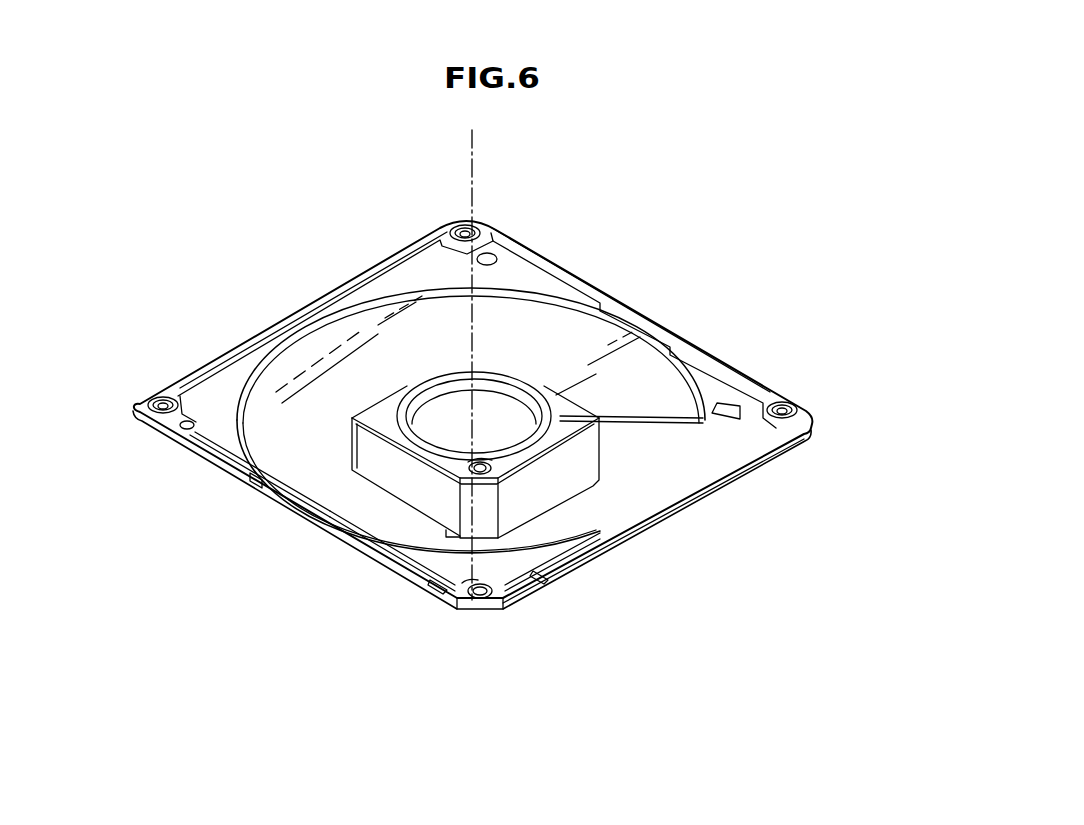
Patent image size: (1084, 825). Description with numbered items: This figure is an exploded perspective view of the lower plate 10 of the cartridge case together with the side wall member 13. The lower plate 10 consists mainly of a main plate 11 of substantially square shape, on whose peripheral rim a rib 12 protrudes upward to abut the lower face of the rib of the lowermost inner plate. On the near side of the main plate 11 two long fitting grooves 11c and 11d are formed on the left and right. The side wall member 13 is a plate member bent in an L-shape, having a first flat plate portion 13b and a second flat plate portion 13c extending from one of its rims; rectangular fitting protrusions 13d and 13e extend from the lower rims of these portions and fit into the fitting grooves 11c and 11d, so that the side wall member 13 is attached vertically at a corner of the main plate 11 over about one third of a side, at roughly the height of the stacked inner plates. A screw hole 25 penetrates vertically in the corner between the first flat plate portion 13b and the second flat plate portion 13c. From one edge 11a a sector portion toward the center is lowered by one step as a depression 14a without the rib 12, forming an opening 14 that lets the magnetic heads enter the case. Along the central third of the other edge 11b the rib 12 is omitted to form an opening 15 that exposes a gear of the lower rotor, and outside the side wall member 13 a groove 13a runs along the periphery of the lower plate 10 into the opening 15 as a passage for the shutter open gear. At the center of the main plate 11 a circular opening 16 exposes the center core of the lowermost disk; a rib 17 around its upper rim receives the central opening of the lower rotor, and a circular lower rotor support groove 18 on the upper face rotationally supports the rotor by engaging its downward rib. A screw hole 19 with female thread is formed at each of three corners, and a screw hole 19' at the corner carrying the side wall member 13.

The lower plate 10 is at (560, 257).
The main plate 11 is at (213, 402).
The one edge 11a is at (740, 468).
The other edge 11b is at (320, 527).
The fitting groove 11c is at (433, 585).
The fitting groove 11d is at (535, 497).
The rib 12 is at (688, 346).
The side wall member 13 is at (566, 505).
The groove 13a is at (340, 470).
The first flat plate portion 13b is at (318, 484).
The second flat plate portion 13c is at (510, 520).
The fitting protrusion 13d is at (410, 540).
The fitting protrusion 13e is at (570, 505).
The opening 14 is at (597, 465).
The depression 14a is at (672, 488).
The opening 15 is at (368, 458).
The circular opening 16 is at (405, 410).
The rib 17 is at (445, 432).
The lower rotor support groove 18 is at (404, 300).
The screw hole 19 is at (450, 298).
The screw hole 19' is at (466, 631).
The screw hole 25 is at (425, 536).